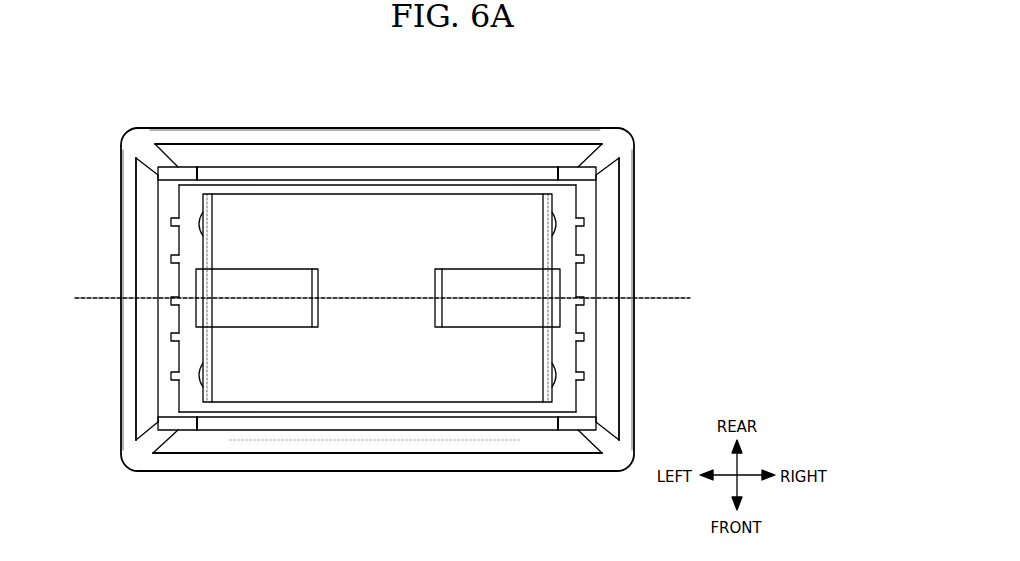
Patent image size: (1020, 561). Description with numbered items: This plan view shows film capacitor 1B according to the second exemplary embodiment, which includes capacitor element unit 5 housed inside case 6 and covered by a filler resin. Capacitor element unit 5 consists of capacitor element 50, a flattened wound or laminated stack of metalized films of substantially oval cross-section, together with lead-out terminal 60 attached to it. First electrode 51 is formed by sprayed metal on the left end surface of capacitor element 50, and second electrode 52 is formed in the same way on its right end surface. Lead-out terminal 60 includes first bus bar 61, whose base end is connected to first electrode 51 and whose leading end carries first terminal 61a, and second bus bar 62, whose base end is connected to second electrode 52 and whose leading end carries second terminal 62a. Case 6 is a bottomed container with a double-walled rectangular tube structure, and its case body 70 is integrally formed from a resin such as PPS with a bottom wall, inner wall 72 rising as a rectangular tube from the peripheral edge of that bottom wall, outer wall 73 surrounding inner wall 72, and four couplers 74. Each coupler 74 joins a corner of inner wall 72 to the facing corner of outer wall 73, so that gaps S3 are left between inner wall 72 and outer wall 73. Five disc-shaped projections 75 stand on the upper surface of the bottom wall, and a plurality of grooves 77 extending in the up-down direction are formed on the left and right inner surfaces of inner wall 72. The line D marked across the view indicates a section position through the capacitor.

The film capacitor 1B is at (656, 132).
The capacitor element unit 5 is at (398, 188).
The case 6 is at (637, 222).
The capacitor element 50 is at (375, 395).
The first electrode 51 is at (207, 404).
The second electrode 52 is at (548, 395).
The lead-out terminal 60 is at (378, 213).
The first bus bar 61 is at (276, 269).
The first terminal 61a is at (320, 282).
The second bus bar 62 is at (481, 270).
The second terminal 62a is at (435, 283).
The case body 70 is at (635, 273).
The inner wall 72 is at (160, 282).
The outer wall 73 is at (128, 230).
The couplers 74 is at (156, 158).
The projections 75 is at (200, 218).
The grooves 77 is at (178, 260).
The gaps S3 is at (330, 445).
The section line D-D' D is at (93, 310).